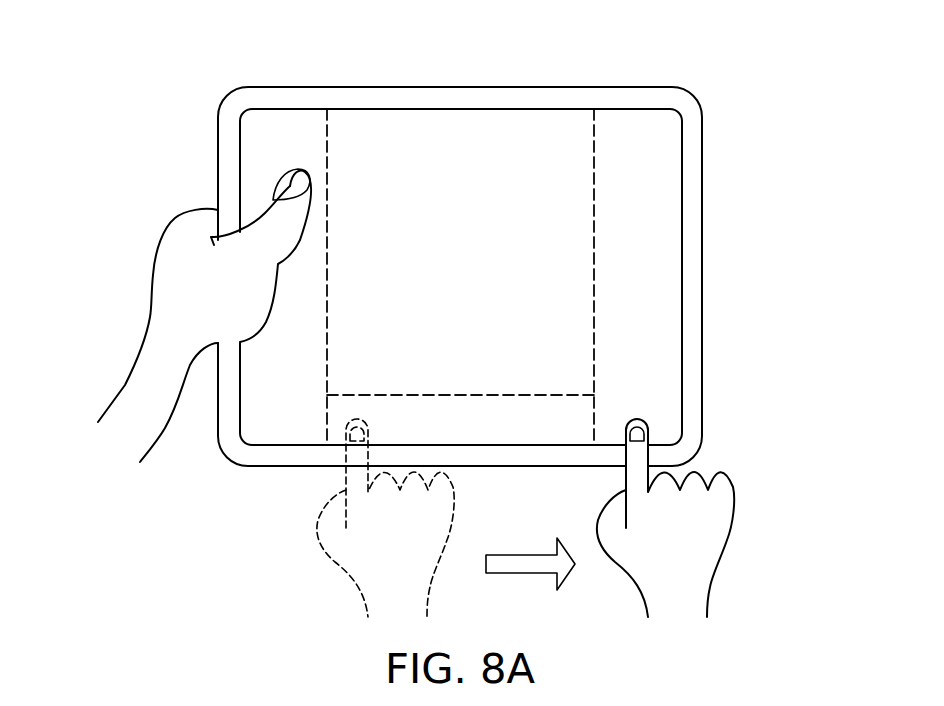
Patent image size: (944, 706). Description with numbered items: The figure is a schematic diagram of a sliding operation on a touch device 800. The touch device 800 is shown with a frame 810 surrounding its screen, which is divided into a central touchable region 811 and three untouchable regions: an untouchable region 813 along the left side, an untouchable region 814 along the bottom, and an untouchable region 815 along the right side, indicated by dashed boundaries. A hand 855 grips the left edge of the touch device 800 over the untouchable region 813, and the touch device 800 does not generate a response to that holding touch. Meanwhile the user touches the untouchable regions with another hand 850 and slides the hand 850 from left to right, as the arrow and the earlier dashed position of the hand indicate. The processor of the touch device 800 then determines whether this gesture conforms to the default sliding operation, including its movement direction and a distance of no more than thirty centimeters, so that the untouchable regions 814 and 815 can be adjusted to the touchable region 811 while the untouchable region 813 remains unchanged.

The touch device 800 is at (275, 87).
The frame / bezel 810 is at (682, 165).
The touchable region 811 is at (452, 145).
The untouchable region 813 is at (262, 157).
The untouchable region 814 is at (340, 410).
The untouchable region 815 is at (655, 260).
The hand 850 is at (681, 518).
The hand 855 is at (155, 367).